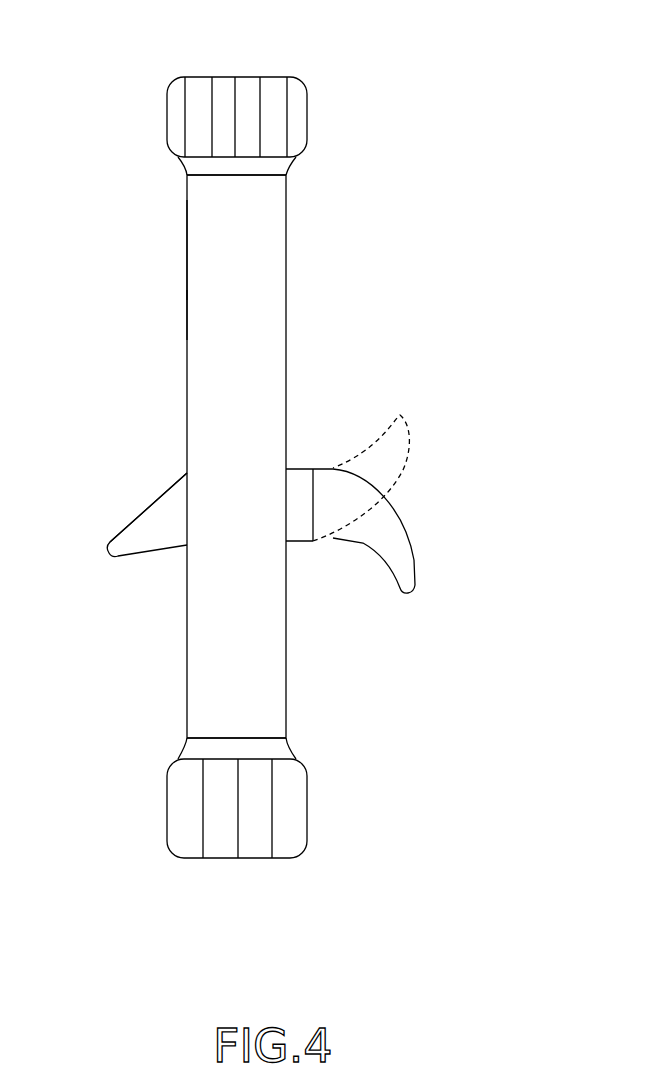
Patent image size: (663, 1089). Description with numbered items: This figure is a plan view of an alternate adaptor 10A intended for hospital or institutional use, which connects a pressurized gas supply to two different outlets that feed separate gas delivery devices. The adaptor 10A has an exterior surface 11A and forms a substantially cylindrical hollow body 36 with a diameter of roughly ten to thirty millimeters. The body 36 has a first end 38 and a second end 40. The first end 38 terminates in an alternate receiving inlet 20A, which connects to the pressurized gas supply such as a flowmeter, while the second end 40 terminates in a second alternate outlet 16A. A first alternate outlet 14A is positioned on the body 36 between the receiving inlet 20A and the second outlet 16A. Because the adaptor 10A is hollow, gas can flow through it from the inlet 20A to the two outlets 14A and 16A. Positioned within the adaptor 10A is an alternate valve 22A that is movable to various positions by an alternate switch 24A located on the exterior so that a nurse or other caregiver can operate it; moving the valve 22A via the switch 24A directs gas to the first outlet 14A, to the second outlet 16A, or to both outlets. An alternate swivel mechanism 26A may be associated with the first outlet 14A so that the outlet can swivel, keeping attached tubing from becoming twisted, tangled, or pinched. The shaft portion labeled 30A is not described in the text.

The alternate adaptor 10A is at (270, 479).
The exterior surface 11A is at (187, 312).
The first alternate outlet 14A is at (403, 527).
The second alternate outlet 16A is at (282, 858).
The alternate receiving inlet 20A is at (297, 113).
The alternate valve 22A is at (187, 473).
The alternate switch 24A is at (142, 528).
The alternate swivel mechanism 26A is at (298, 480).
The shaft 30A is at (222, 458).
The cylindrical hollow body 36 is at (187, 235).
The first end 38 is at (287, 180).
The second end 40 is at (190, 750).